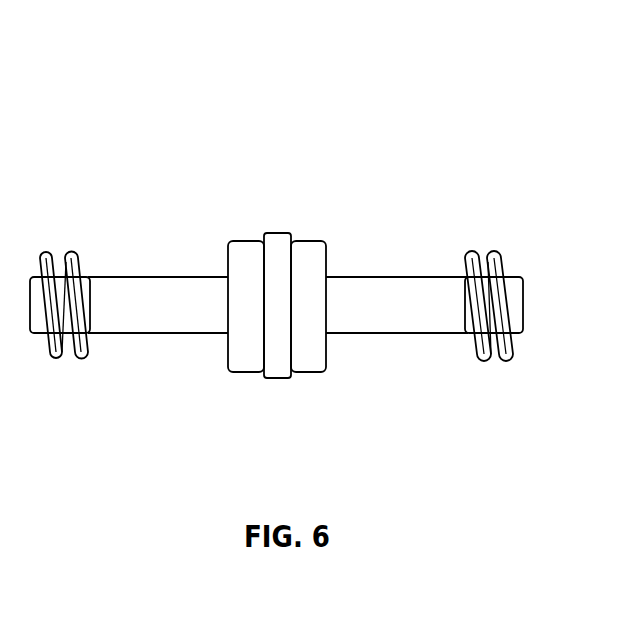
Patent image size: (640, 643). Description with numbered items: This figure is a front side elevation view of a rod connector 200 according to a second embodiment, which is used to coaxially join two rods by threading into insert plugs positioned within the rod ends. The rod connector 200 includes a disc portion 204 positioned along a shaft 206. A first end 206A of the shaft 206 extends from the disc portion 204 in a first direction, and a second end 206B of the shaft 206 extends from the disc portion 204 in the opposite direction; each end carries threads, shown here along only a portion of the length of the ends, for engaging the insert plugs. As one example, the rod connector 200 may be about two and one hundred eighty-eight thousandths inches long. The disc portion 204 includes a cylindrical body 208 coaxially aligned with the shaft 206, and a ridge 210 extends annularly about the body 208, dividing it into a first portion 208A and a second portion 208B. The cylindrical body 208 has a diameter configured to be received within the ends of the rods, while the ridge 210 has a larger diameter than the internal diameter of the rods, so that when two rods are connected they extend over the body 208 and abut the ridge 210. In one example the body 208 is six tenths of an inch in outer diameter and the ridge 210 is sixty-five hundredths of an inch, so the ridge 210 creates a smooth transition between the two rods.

The rod connector 200 is at (497, 98).
The disc portion 204 is at (312, 384).
The shaft 206 is at (115, 290).
The first end of the shaft 206A is at (159, 313).
The second end of the shaft 206B is at (418, 317).
The cylindrical body 208 is at (246, 375).
The first portion of the body 208A is at (245, 241).
The second portion of the body 208B is at (326, 241).
The ridge 210 is at (273, 234).